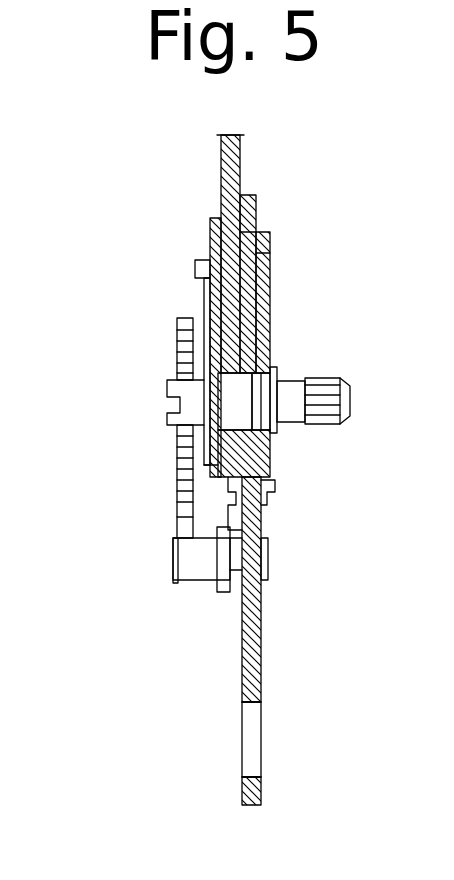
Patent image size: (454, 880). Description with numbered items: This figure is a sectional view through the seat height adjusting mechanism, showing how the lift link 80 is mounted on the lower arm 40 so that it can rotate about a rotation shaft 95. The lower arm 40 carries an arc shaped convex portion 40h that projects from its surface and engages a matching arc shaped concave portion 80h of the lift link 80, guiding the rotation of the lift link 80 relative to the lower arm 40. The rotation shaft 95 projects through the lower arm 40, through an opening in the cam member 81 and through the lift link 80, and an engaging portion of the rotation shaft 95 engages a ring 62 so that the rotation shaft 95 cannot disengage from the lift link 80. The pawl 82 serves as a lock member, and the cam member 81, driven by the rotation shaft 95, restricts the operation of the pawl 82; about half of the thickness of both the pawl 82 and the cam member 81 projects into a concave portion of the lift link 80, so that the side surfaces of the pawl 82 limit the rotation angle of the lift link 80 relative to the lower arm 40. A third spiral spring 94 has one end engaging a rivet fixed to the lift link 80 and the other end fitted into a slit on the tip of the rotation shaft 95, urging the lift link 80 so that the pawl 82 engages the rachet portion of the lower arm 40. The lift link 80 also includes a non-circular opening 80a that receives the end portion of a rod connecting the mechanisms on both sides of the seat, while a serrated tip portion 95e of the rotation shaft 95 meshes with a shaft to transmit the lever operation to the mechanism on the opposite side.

The cam member 81 is at (258, 347).
The pawl 82 is at (263, 288).
The ring 62 is at (274, 435).
The tip portion 95e is at (335, 380).
The lower arm 40 is at (206, 468).
The rotation shaft 95 is at (167, 417).
The third spiral spring 94 is at (176, 343).
The lift link 80 is at (248, 670).
The opening 80a is at (262, 748).
The arc shaped convex portion 40h is at (263, 510).
The arc shaped concave portion 80h is at (268, 500).